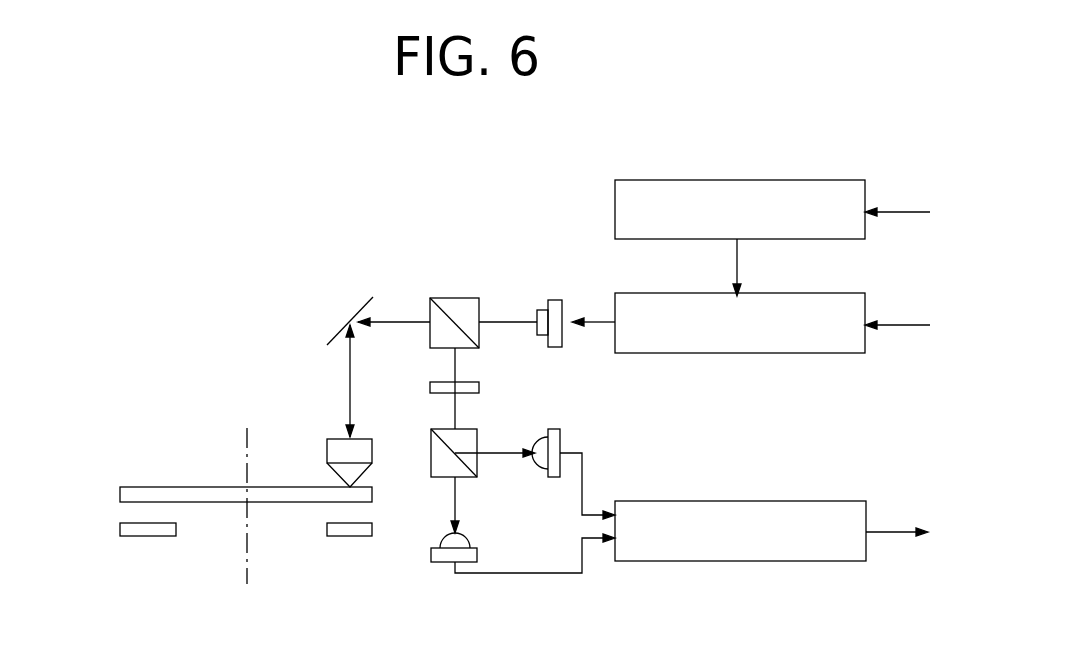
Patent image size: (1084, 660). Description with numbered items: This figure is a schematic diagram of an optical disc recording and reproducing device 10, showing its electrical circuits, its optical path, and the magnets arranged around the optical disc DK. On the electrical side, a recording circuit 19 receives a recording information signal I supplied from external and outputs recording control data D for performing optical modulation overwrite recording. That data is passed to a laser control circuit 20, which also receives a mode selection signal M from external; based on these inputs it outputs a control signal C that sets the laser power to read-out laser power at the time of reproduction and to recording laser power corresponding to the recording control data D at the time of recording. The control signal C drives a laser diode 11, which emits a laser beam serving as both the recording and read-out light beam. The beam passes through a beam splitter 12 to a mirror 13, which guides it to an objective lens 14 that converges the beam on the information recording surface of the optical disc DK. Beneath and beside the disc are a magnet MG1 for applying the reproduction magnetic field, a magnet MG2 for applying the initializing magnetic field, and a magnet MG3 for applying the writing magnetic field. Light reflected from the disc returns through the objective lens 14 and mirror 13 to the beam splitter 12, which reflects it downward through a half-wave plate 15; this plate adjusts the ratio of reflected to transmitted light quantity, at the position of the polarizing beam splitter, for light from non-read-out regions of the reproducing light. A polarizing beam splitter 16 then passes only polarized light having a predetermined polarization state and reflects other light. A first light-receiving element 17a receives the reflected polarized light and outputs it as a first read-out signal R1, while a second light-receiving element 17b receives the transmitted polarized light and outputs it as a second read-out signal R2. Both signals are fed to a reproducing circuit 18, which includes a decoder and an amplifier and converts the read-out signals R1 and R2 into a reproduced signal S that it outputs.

The optical disc recording and reproducing device 10 is at (403, 188).
The laser diode 11 is at (563, 300).
The beam splitter 12 is at (437, 304).
The mirror 13 is at (334, 334).
The objective lens 14 is at (376, 442).
The half-wave plate 15 is at (475, 396).
The polarizing beam splitter 16 is at (460, 432).
The first light-receiving element 17a is at (562, 440).
The second light-receiving element 17b is at (478, 554).
The reproducing circuit 18 is at (688, 500).
The recording circuit 19 is at (783, 182).
The laser control circuit 20 is at (801, 353).
The optical disc DK is at (178, 486).
The magnet for reproduction magnetic field MG1 is at (372, 528).
The magnet for initializing magnetic field MG2 is at (133, 538).
The magnet for writing magnetic field MG3 is at (334, 616).
The first read-out signal R1 is at (585, 490).
The second read-out signal R2 is at (546, 574).
The reproduced signal S is at (895, 529).
The recording information signal I is at (900, 211).
The recording control data D is at (737, 265).
The mode selection signal M is at (898, 322).
The control signal C is at (598, 324).